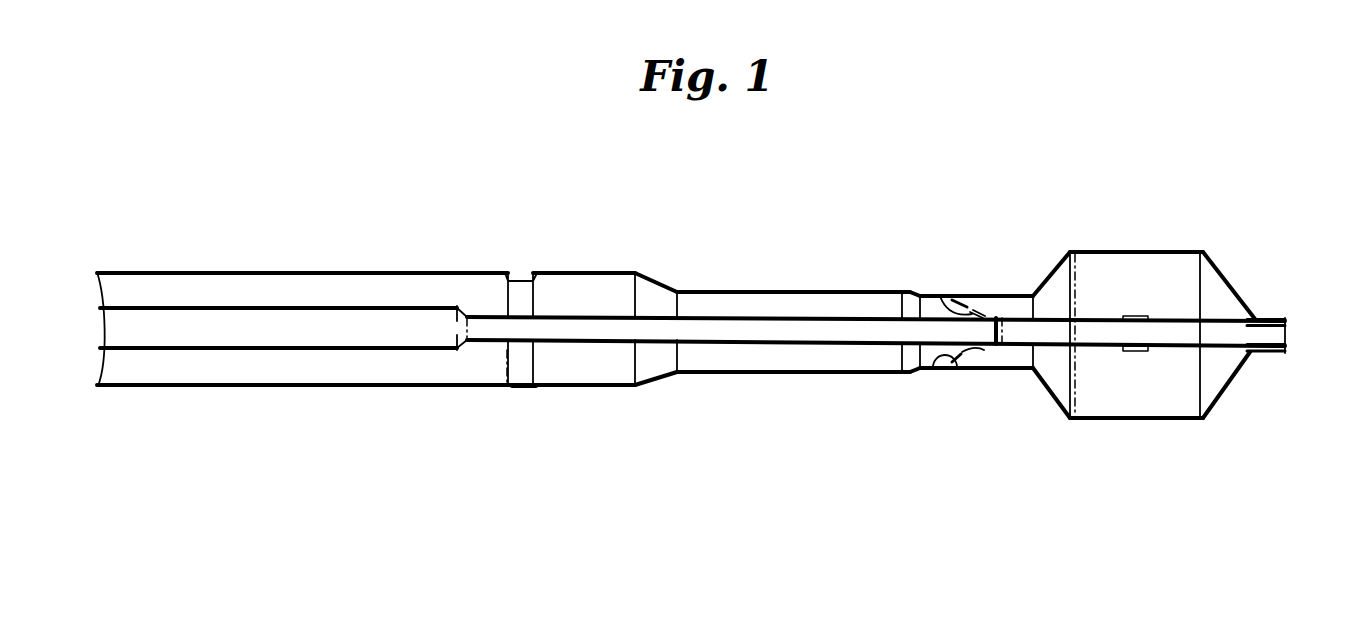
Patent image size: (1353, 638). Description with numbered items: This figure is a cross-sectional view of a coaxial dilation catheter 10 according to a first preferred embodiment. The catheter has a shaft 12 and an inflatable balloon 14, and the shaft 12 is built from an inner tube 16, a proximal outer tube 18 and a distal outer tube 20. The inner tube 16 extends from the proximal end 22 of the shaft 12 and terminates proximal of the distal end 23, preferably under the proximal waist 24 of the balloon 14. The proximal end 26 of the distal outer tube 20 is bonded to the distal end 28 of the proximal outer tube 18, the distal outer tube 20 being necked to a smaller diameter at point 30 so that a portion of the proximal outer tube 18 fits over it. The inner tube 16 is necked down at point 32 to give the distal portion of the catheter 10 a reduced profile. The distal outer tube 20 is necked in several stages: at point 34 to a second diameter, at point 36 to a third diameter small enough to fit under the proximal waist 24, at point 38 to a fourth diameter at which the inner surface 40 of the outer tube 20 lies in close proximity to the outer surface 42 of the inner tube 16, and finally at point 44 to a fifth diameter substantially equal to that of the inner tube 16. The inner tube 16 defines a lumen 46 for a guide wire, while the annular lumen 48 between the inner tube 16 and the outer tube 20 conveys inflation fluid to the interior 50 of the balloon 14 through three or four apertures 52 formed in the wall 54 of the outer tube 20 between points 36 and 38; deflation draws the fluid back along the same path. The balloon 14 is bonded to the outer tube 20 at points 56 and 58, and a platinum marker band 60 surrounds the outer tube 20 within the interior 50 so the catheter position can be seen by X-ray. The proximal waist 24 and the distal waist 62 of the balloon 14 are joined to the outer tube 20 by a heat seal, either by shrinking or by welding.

The coaxial dilation catheter 10 is at (793, 495).
The shaft 12 is at (518, 482).
The inflatable balloon 14 is at (1153, 422).
The inner tube 16 is at (223, 350).
The proximal outer tube 18 is at (338, 386).
The distal outer tube 20 is at (702, 372).
The proximal end 22 is at (120, 410).
The distal end 23 is at (1310, 360).
The proximal waist 24 is at (1005, 293).
The proximal end of the distal outer tube 26 is at (517, 385).
The distal end of the proximal outer tube 28 is at (453, 388).
The necking point of the distal outer tube 30 is at (556, 396).
The necking point of the inner tube 32 is at (462, 312).
The first necking point of the outer tube 34 is at (673, 276).
The second necking point of the outer tube 36 is at (912, 292).
The third necking point of the outer tube 38 is at (985, 313).
The inner surface of the outer tube 40 is at (1040, 297).
The outer surface of the inner tube 42 is at (942, 295).
The fourth necking point of the outer tube 44 is at (1042, 352).
The guide wire lumen 46 is at (180, 323).
The inflation lumen 48 is at (318, 293).
The balloon interior 50 is at (1182, 385).
The apertures 52 is at (985, 363).
The wall of the outer tube 54 is at (933, 367).
The proximal balloon bond point 56 is at (958, 293).
The distal balloon bond point 58 is at (1263, 318).
The platinum marker band 60 is at (1130, 316).
The distal waist 62 is at (1272, 353).